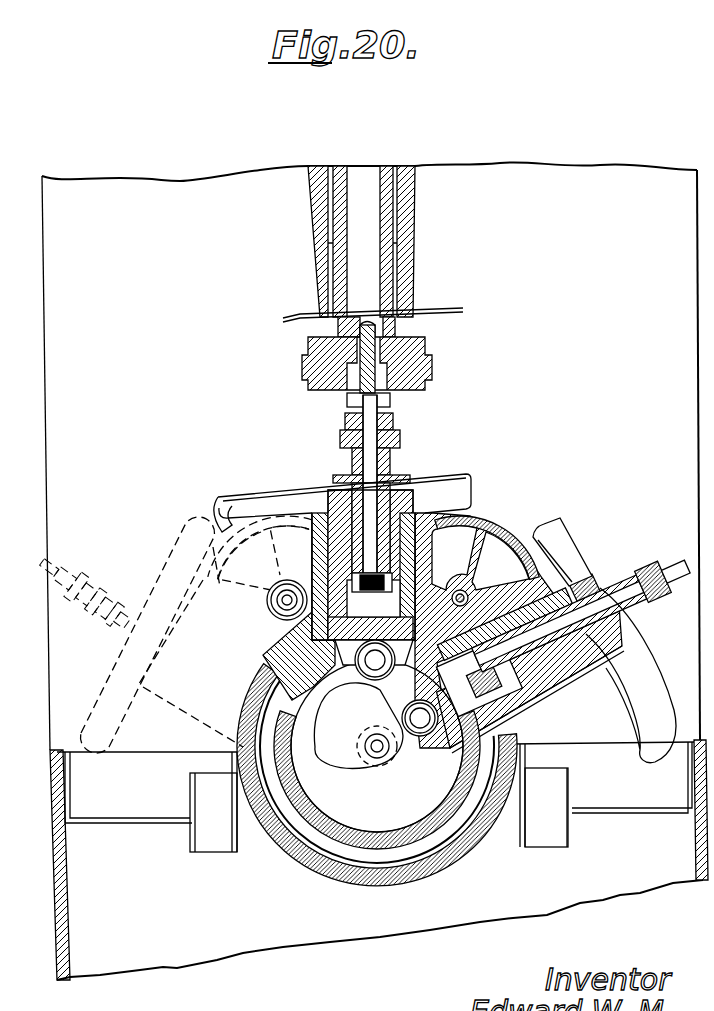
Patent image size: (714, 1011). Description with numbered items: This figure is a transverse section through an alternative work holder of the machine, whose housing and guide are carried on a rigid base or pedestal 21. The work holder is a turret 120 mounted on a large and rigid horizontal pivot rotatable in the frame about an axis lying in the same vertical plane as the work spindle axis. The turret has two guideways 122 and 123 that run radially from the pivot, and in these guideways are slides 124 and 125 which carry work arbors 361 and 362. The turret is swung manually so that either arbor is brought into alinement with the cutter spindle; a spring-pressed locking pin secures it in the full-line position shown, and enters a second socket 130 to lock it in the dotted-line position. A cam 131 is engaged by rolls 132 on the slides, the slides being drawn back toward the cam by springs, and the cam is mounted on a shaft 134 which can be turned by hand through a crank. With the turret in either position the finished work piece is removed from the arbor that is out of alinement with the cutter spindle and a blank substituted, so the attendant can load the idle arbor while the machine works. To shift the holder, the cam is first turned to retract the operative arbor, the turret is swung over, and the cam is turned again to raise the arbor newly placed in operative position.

The base or pedestal 21 is at (402, 688).
The turret 120 is at (497, 531).
The guideway 122 is at (418, 552).
The guideway 123 is at (533, 711).
The slide 124 is at (403, 517).
The slide 125 is at (567, 694).
The second socket 130 is at (285, 606).
The cam 131 is at (341, 748).
The rolls 132 is at (362, 671).
The shaft 134 is at (377, 754).
The work arbor 361 is at (365, 449).
The work arbor 362 is at (613, 598).